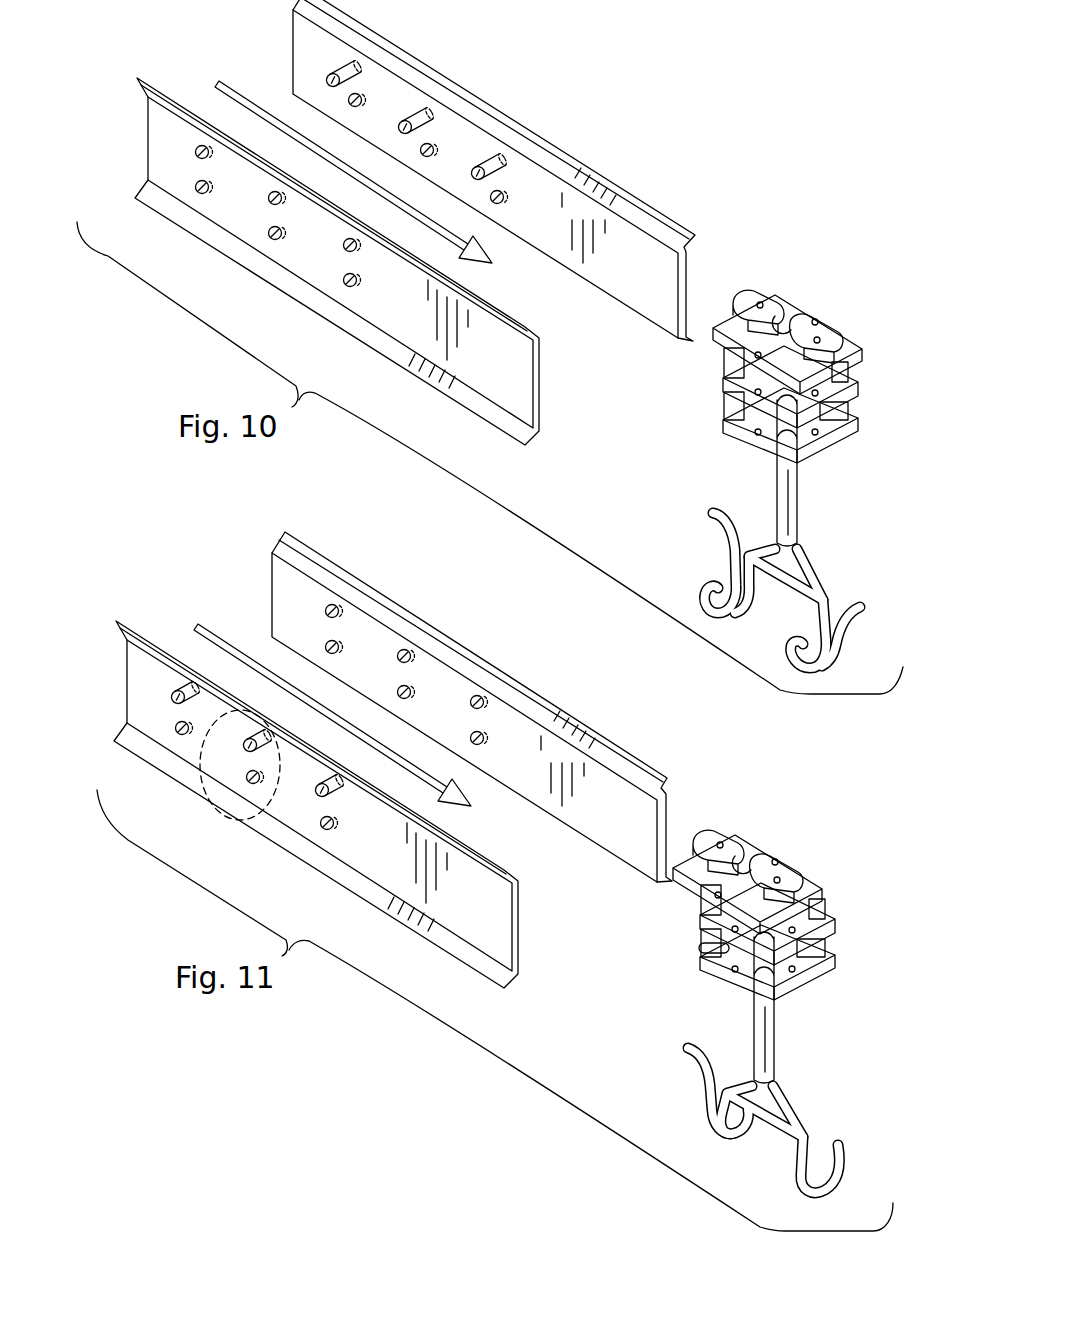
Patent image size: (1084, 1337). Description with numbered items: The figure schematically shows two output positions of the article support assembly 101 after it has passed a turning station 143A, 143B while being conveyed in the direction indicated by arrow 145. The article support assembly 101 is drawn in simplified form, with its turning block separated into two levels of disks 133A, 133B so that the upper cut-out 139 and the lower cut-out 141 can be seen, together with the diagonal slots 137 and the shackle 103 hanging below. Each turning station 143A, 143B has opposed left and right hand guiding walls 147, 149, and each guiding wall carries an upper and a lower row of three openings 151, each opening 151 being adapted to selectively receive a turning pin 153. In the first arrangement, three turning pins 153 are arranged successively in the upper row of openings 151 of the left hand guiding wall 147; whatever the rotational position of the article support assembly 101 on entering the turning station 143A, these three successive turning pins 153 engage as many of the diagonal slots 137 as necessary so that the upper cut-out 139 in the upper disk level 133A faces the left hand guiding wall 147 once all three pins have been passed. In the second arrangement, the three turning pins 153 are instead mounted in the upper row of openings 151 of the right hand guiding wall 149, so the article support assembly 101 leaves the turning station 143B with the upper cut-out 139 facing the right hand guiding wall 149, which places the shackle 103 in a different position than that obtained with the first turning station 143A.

In FIG. 10, the article support assembly 101 is at (811, 482).
In FIG. 11, the article support assembly 101 is at (789, 1018).
In FIG. 10, the shackle 103 is at (728, 562).
In FIG. 11, the shackle 103 is at (708, 1098).
In FIG. 10, the upper level disk of turning block 133A is at (848, 384).
In FIG. 11, the upper level disk of turning block 133A is at (828, 921).
In FIG. 10, the lower level disk of turning block 133B is at (850, 428).
In FIG. 11, the lower level disk of turning block 133B is at (829, 950).
In FIG. 10, the diagonal slot 137 is at (730, 375).
In FIG. 11, the diagonal slot 137 is at (838, 905).
In FIG. 10, the upper cut-out 139 is at (832, 322).
In FIG. 11, the upper cut-out 139 is at (740, 931).
In FIG. 10, the lower cut-out 141 is at (752, 418).
In FIG. 11, the lower cut-out 141 is at (786, 970).
In FIG. 10, the turning station 143A is at (652, 173).
In FIG. 11, the turning station 143B is at (664, 759).
In FIG. 10, the arrow 145 is at (250, 106).
In FIG. 11, the arrow 145 is at (228, 645).
In FIG. 10, the left hand guiding wall 147 is at (656, 282).
In FIG. 11, the left hand guiding wall 147 is at (636, 824).
In FIG. 10, the right hand guiding wall 149 is at (521, 374).
In FIG. 11, the right hand guiding wall 149 is at (498, 919).
In FIG. 10, the opening 151 is at (198, 190).
In FIG. 11, the opening 151 is at (249, 781).
In FIG. 10, the turning pin 153 is at (353, 71).
In FIG. 11, the turning pin 153 is at (168, 694).